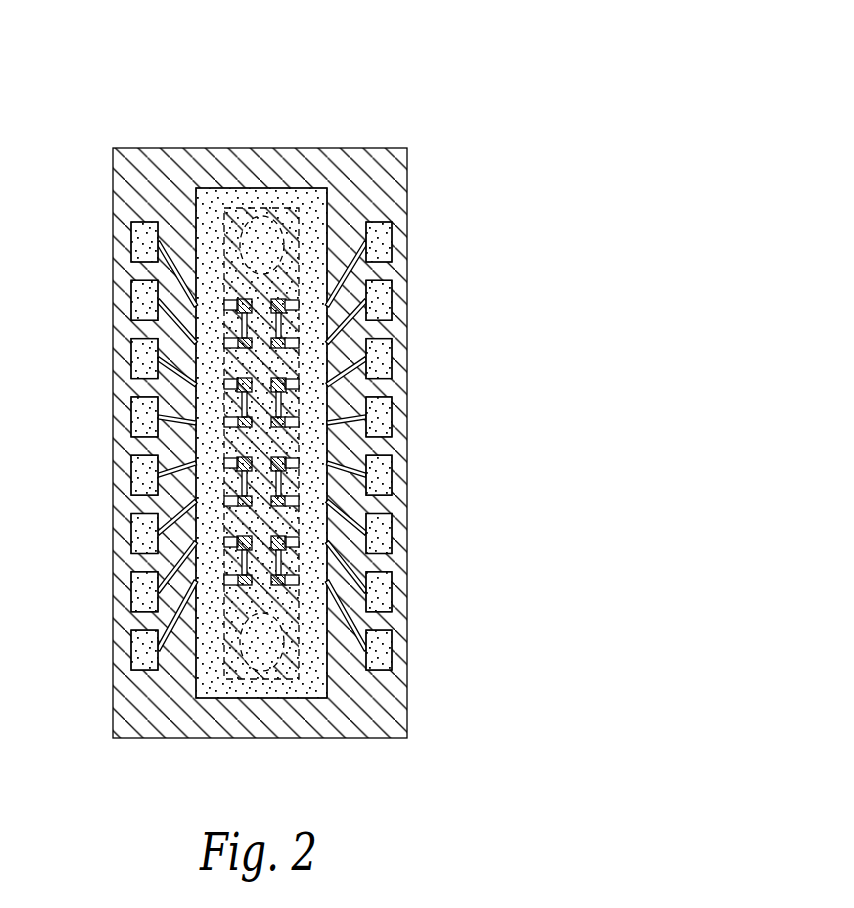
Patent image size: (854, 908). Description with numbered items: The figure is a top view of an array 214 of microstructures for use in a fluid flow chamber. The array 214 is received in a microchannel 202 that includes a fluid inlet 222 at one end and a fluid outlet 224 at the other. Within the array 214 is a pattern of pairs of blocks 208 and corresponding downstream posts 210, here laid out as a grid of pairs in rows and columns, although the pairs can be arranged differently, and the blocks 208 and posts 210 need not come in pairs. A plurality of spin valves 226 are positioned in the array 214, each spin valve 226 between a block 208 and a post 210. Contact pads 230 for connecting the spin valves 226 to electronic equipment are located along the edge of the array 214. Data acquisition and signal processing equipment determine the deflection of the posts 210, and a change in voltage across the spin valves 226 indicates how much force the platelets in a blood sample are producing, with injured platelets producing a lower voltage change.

The array 214 is at (398, 88).
The microchannel 202 is at (196, 673).
The fluid inlet 222 is at (257, 200).
The fluid outlet 224 is at (288, 647).
The block 208 is at (240, 384).
The spin valve 226 is at (287, 323).
The post 210 is at (300, 421).
The contact pad 230 is at (380, 242).